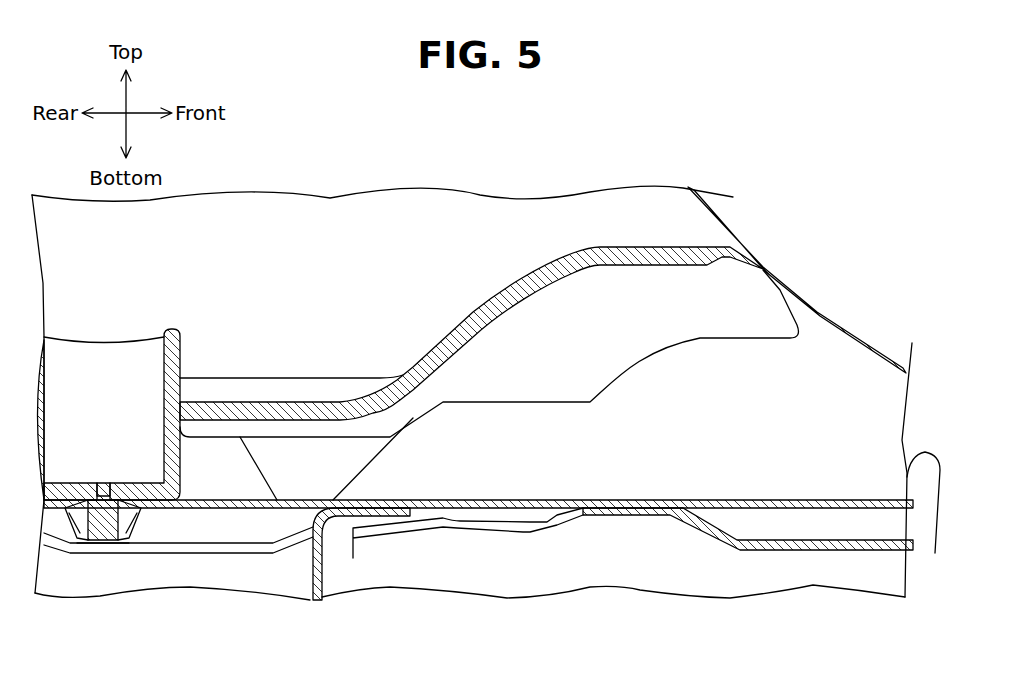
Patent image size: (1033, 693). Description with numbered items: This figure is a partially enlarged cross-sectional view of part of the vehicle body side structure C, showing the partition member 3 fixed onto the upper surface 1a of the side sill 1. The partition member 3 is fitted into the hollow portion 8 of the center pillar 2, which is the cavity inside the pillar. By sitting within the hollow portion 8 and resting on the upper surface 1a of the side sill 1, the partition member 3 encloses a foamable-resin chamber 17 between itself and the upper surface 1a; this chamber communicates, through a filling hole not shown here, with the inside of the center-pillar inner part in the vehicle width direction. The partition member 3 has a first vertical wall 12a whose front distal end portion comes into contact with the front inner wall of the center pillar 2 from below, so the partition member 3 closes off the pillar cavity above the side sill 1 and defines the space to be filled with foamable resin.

The side sill 1 is at (816, 466).
The upper surface of the side sill 1a is at (935, 553).
The center pillar 2 is at (731, 226).
The partition member 3 is at (450, 302).
The hollow portion 8 is at (226, 267).
The first vertical wall 12a is at (527, 277).
The foamable-resin chamber 17 is at (688, 456).
The vehicle body side structure C is at (859, 231).